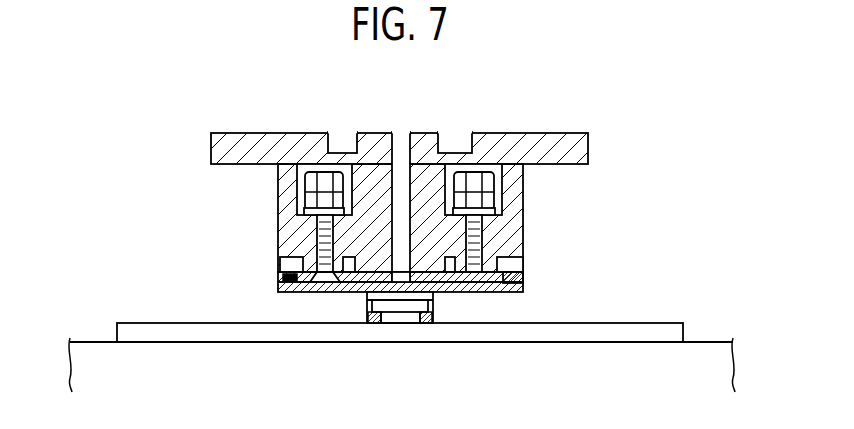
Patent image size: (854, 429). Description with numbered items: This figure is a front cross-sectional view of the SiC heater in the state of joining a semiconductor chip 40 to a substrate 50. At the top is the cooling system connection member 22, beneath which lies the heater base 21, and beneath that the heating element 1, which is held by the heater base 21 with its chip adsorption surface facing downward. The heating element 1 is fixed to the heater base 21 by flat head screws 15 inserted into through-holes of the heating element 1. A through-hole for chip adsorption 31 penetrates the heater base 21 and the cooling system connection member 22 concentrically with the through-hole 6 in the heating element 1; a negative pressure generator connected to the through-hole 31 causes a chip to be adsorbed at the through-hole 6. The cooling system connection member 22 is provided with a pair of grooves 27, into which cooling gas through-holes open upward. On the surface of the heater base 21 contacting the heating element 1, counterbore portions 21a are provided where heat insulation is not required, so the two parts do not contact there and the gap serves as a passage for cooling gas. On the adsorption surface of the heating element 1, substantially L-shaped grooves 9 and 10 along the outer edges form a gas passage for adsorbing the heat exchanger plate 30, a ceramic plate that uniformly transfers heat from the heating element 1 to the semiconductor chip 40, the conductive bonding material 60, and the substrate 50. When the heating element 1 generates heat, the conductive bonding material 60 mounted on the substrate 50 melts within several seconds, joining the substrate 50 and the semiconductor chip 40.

The heating element 1 is at (525, 277).
The through-hole 6 is at (367, 290).
The groove 9 is at (292, 283).
The groove 10 is at (507, 292).
The flat head screw 15 is at (323, 168).
The heater base 21 is at (513, 212).
The counterbore portion 21a is at (513, 265).
The cooling system connection member 22 is at (573, 150).
The groove 27 is at (340, 150).
The heat exchanger plate 30 is at (525, 290).
The through-hole for chip adsorption 31 is at (401, 160).
The semiconductor chip 40 is at (430, 300).
The substrate 50 is at (657, 333).
The conductive bonding material 60 is at (425, 323).